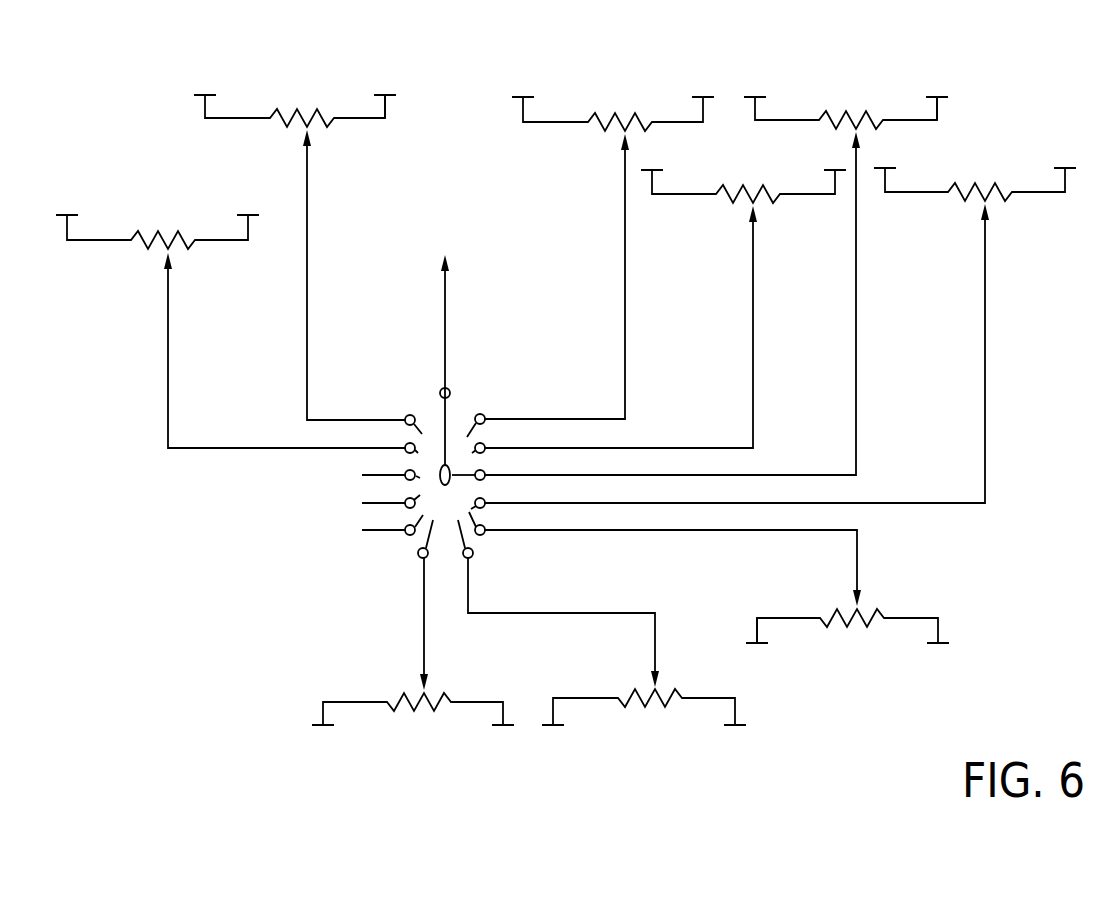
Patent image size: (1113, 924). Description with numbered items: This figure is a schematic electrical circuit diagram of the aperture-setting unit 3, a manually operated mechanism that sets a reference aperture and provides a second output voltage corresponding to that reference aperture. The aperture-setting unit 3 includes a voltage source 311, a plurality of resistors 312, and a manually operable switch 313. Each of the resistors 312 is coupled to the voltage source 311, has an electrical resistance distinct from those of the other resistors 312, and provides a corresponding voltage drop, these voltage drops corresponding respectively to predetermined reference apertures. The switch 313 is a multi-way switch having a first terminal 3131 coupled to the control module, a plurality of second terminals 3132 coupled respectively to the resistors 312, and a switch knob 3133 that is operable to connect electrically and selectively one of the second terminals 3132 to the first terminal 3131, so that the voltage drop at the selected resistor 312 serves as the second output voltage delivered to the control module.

The aperture-setting unit 3 is at (262, 582).
The voltage source 311 is at (395, 88).
The resistors 312 is at (305, 118).
The manually operable switch 313 is at (408, 390).
The first terminal 3131 is at (440, 393).
The second terminals 3132 is at (420, 555).
The switch knob 3133 is at (458, 470).